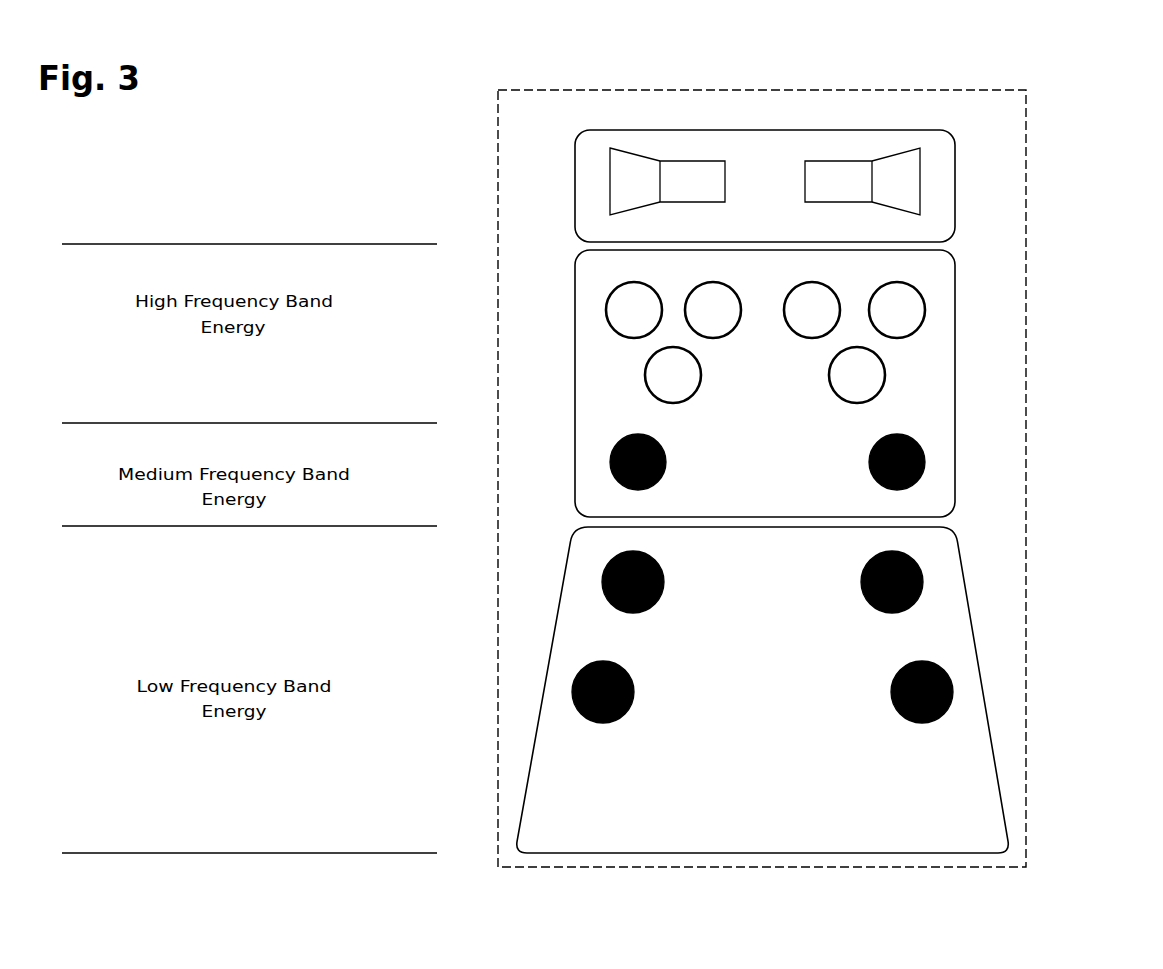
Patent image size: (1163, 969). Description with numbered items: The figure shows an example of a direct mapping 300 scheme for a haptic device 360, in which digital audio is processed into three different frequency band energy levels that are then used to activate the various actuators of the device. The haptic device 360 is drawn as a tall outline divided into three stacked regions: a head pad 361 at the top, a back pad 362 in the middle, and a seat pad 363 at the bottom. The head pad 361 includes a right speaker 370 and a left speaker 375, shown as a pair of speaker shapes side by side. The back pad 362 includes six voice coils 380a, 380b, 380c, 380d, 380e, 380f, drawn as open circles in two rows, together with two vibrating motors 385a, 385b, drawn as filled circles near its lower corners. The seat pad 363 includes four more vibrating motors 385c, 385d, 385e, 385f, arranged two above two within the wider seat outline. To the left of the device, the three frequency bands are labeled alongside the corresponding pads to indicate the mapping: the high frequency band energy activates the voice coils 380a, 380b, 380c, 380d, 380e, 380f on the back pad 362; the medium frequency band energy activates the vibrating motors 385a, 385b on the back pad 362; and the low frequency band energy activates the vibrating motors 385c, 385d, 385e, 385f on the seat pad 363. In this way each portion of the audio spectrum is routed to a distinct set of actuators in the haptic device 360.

The direct mapping 300 is at (1092, 100).
The haptic device 360 is at (762, 478).
The head pad 361 is at (739, 224).
The back pad 362 is at (740, 491).
The seat pad 363 is at (749, 841).
The right speaker 370 is at (648, 197).
The left speaker 375 is at (843, 197).
The voice coil 380a is at (610, 321).
The voice coil 380b is at (689, 321).
The voice coil 380c is at (788, 321).
The voice coil 380d is at (873, 321).
The voice coil 380e is at (649, 386).
The voice coil 380f is at (835, 386).
The vibrating motor 385a is at (697, 450).
The vibrating motor 385b is at (857, 456).
The vibrating motor 385c is at (676, 600).
The vibrating motor 385d is at (848, 597).
The vibrating motor 385e is at (646, 703).
The vibrating motor 385f is at (882, 695).